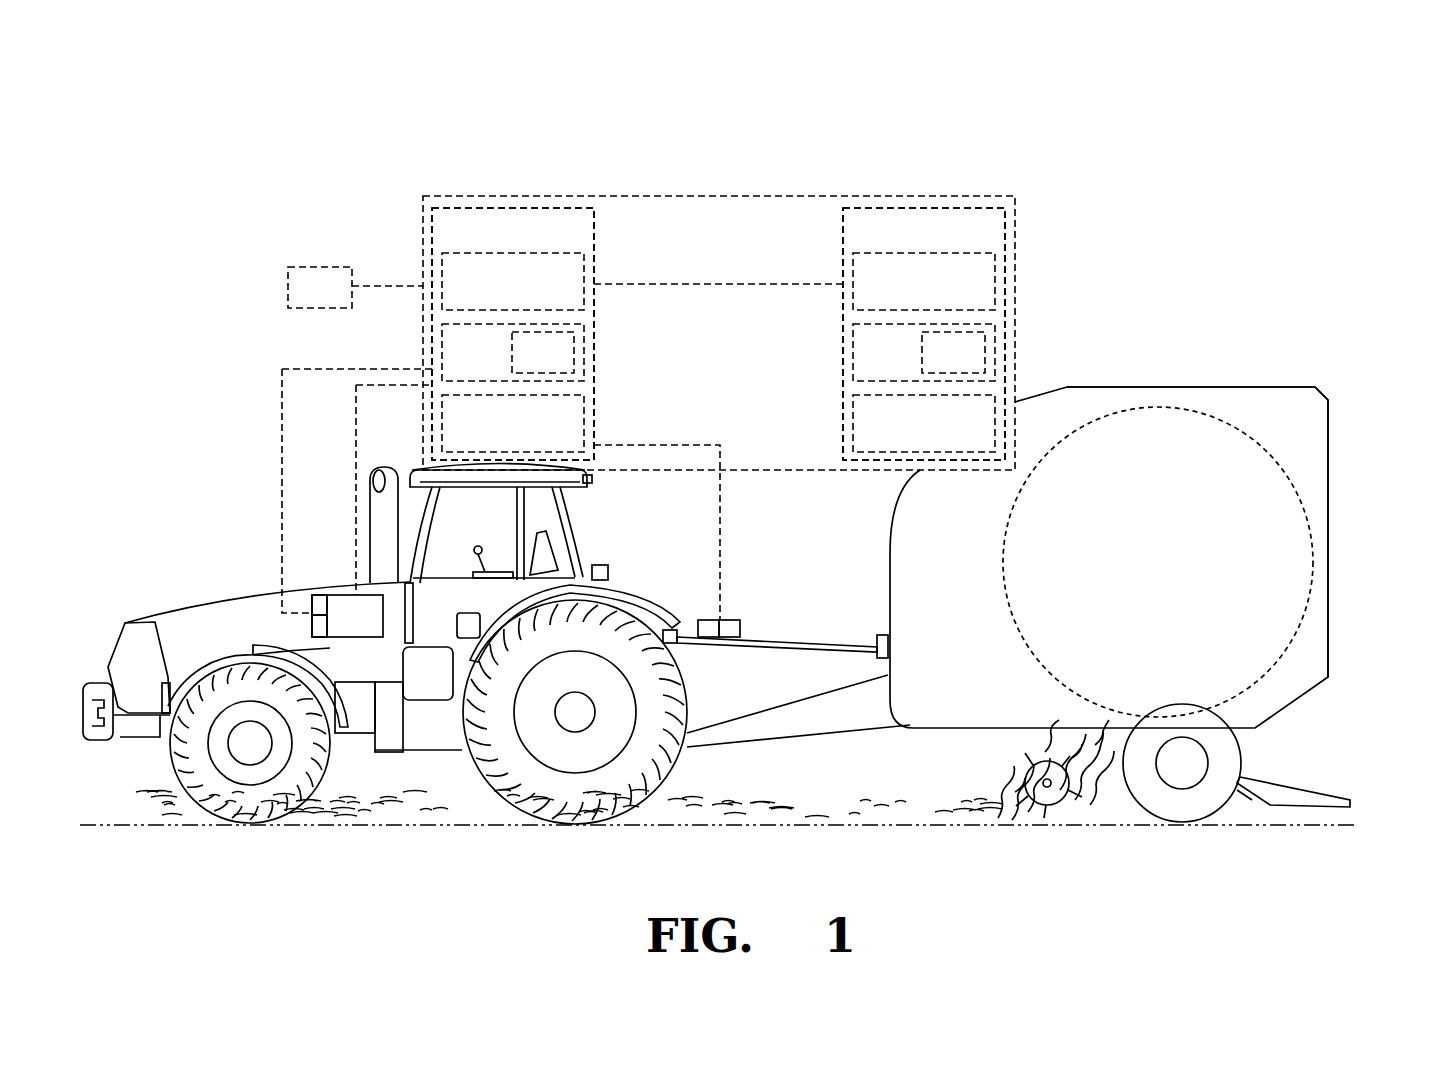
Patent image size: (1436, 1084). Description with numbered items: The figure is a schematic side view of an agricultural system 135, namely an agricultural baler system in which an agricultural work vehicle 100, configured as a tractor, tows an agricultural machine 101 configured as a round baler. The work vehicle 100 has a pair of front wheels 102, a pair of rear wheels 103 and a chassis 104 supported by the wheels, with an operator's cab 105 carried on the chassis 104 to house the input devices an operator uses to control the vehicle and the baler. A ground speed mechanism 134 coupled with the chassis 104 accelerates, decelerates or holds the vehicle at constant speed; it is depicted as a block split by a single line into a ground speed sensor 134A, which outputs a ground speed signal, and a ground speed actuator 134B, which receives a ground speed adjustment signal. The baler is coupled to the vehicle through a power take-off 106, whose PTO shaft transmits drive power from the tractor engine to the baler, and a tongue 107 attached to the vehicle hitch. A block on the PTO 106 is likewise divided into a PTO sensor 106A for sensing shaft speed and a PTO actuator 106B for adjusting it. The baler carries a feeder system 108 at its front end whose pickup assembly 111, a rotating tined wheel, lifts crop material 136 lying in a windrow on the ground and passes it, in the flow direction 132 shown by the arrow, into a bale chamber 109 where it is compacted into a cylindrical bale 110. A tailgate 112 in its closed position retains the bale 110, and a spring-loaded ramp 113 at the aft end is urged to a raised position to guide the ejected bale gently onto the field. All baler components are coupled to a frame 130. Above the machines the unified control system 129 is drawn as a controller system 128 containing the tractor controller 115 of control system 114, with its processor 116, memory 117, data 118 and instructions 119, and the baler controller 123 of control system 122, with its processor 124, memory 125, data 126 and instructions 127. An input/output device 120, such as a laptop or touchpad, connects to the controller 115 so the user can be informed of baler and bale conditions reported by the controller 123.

The agricultural work vehicle 100 is at (190, 558).
The agricultural machine 101 is at (1077, 380).
The front wheels 102 is at (170, 760).
The rear wheels 103 is at (680, 760).
The chassis 104 is at (398, 747).
The operator's cab 105 is at (467, 495).
The power take-off 106 is at (797, 637).
The PTO sensor 106A is at (702, 622).
The PTO actuator 106B is at (737, 620).
The tongue 107 is at (763, 710).
The feeder system 108 is at (985, 770).
The bale chamber 109 is at (1205, 400).
The bale 110 is at (1303, 508).
The pickup assembly 111 is at (1040, 795).
The tailgate 112 is at (1315, 387).
The ramp 113 is at (1322, 788).
The control system 114 is at (622, 185).
The controller 115 is at (483, 242).
The processor 116 is at (458, 299).
The memory 117 is at (453, 367).
The data 118 is at (521, 367).
The instructions 119 is at (458, 437).
The input/output device 120 is at (299, 301).
The control system 122 is at (833, 178).
The controller 123 is at (896, 242).
The processor 124 is at (869, 299).
The memory 125 is at (863, 367).
The data 126 is at (931, 367).
The instructions 127 is at (869, 437).
The controller system 128 is at (737, 242).
The control system 129 is at (802, 100).
The frame 130 is at (1108, 730).
The flow direction 132 is at (855, 803).
The ground speed mechanism 134 is at (336, 628).
The ground speed sensor 134A is at (318, 597).
The ground speed actuator 134B is at (310, 633).
The agricultural system 135 is at (255, 197).
The crop material 136 is at (375, 812).